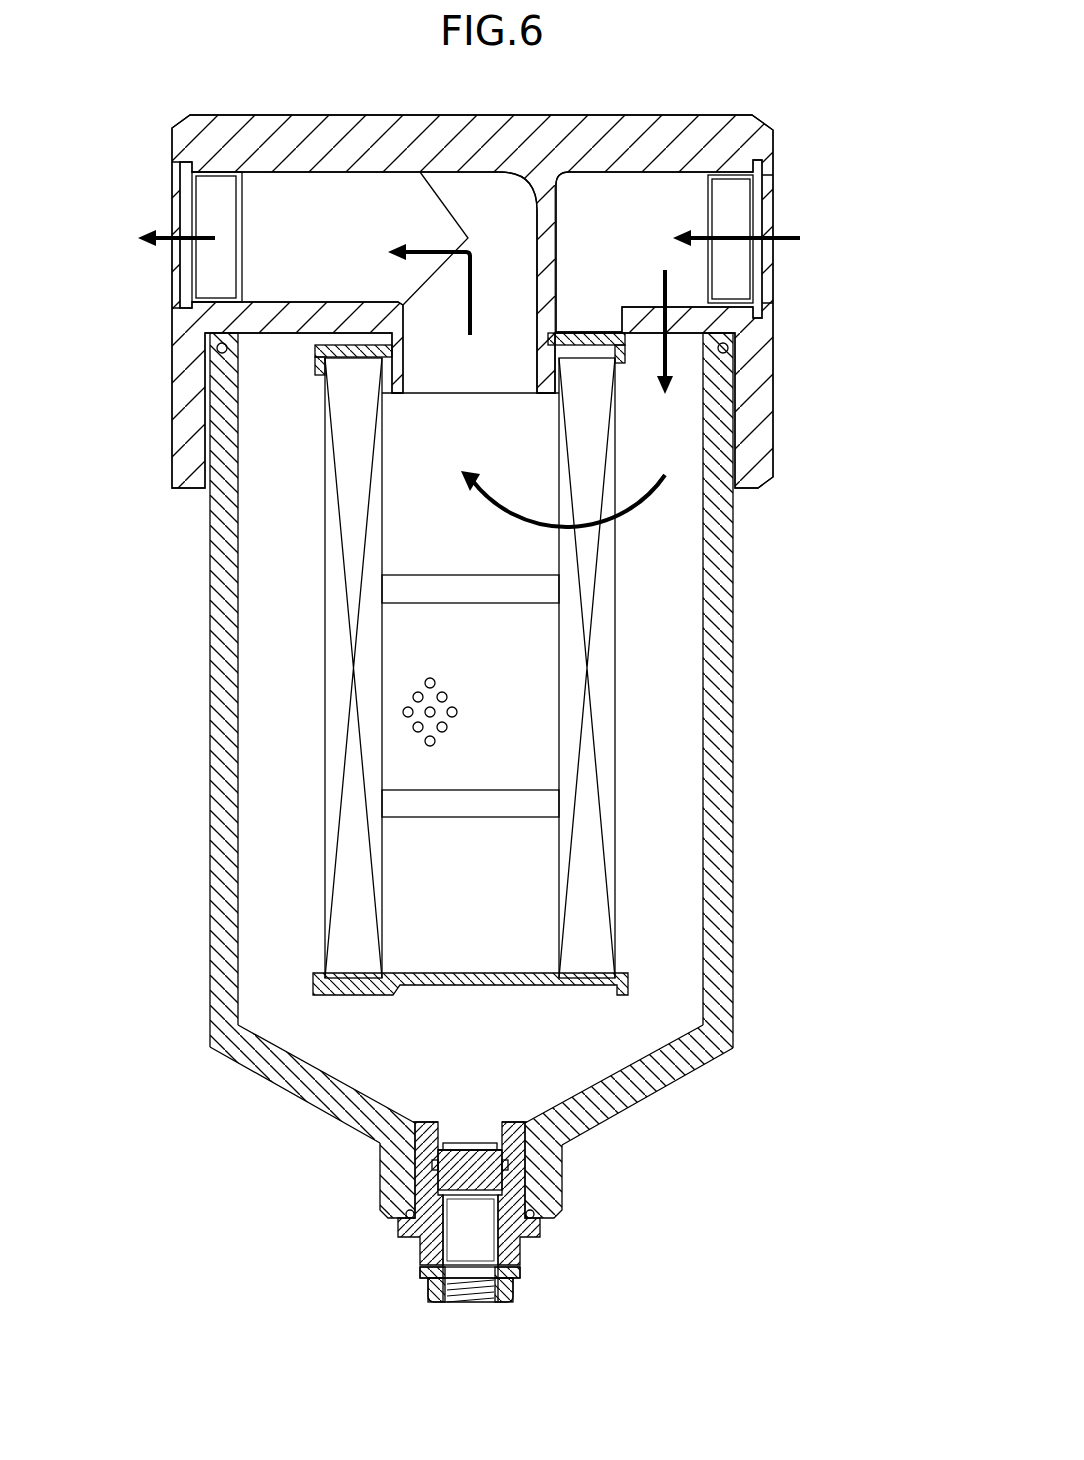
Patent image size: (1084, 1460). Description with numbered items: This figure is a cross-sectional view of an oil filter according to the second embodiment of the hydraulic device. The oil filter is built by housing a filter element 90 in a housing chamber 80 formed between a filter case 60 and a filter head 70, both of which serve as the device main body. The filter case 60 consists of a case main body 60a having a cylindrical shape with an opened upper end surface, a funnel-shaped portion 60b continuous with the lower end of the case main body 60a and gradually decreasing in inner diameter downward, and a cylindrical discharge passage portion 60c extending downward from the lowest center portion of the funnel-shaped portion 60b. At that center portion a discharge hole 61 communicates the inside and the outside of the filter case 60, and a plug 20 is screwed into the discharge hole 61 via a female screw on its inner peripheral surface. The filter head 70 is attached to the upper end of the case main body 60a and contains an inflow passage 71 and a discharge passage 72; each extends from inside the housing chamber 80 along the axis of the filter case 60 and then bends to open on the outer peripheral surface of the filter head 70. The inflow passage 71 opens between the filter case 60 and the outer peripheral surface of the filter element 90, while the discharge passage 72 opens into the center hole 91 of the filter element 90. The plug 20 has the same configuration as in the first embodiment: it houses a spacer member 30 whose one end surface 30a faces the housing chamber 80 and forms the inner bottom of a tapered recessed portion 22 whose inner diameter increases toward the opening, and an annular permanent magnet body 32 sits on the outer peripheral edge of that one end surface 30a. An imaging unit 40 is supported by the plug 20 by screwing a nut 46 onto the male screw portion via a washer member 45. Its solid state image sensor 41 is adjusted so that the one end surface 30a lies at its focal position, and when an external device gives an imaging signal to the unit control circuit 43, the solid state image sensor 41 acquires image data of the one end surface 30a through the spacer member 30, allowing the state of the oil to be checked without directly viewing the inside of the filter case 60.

The filter head 70 is at (472, 278).
The inflow passage 71 is at (562, 195).
The discharge passage 72 is at (470, 170).
The housing chamber 80 is at (535, 777).
The filter element 90 is at (549, 664).
The center hole 91 is at (559, 660).
The filter case 60 is at (535, 777).
The case main body 60a is at (734, 1030).
The funnel-shaped portion 60b is at (645, 1100).
The discharge passage portion 60c is at (562, 1190).
The discharge hole 61 is at (420, 1122).
The plug 20 is at (513, 1245).
The recessed portion 22 is at (454, 1146).
The spacer member 30 is at (485, 1128).
The one end surface 30a is at (486, 1146).
The magnet body 32 is at (437, 1150).
The imaging unit 40 is at (472, 1287).
The solid state image sensor 41 is at (470, 1283).
The unit control circuit 43 is at (472, 1330).
The washer member 45 is at (420, 1272).
The nut 46 is at (430, 1290).